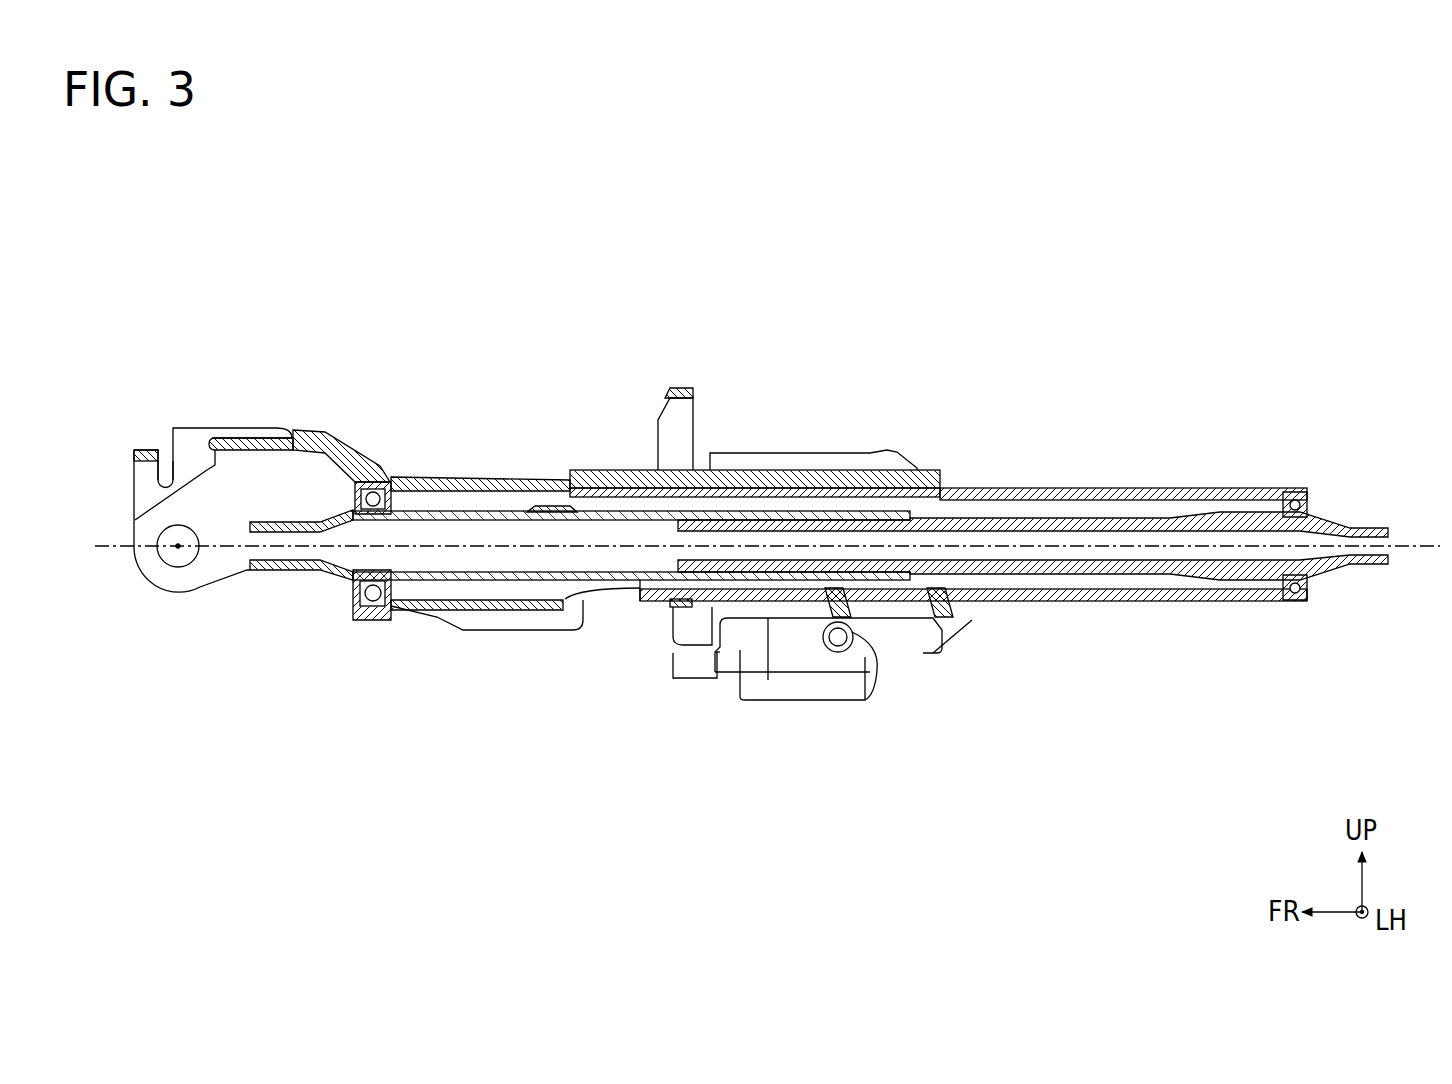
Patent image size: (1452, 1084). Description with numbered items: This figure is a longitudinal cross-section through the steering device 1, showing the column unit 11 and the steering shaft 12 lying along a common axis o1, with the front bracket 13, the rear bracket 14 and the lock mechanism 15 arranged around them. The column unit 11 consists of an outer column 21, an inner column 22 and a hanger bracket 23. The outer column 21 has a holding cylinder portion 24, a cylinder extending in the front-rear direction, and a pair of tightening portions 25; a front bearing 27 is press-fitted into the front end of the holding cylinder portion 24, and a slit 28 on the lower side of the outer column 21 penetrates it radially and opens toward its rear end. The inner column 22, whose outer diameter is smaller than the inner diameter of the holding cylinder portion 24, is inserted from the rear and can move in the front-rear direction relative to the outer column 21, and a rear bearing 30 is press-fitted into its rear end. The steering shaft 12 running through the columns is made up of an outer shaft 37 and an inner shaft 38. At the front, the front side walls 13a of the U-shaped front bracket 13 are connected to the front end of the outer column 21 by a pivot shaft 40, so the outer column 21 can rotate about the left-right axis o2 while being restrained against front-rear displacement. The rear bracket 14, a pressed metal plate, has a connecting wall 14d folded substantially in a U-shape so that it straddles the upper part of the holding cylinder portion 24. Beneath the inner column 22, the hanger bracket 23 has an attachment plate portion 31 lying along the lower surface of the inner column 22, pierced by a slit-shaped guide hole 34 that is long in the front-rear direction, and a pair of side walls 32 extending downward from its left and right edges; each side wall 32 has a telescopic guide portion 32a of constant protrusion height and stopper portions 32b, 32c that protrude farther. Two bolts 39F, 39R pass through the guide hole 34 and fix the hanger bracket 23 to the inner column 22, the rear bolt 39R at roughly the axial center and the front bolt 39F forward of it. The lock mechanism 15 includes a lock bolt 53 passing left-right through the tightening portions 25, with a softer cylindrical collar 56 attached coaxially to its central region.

The steering device 1 is at (1190, 398).
The column unit 11 is at (1062, 338).
The steering shaft 12 is at (842, 338).
The front bracket 13 is at (213, 424).
The front side walls 13a is at (183, 453).
The rear bracket 14 is at (690, 384).
The connecting wall 14d is at (670, 390).
The lock mechanism 15 is at (770, 622).
The outer column 21 is at (938, 467).
The inner column 22 is at (995, 484).
The hanger bracket 23 is at (960, 650).
The holding cylinder portion 24 is at (870, 468).
The tightening portions 25 is at (760, 626).
The front bearing 27 is at (380, 496).
The slit 28 is at (578, 632).
The rear bearing 30 is at (1290, 603).
The attachment plate portion 31 is at (717, 636).
The side walls 32 is at (782, 879).
The telescopic guide portion 32a is at (743, 652).
The stopper portion 32b is at (683, 610).
The stopper portion 32c is at (940, 655).
The guide hole 34 is at (722, 626).
The outer shaft 37 is at (704, 512).
The inner shaft 38 is at (760, 528).
The bolt 39F is at (858, 618).
The bolt 39R is at (953, 633).
The pivot shaft 40 is at (192, 566).
The lock bolt 53 is at (823, 648).
The collar 56 is at (841, 652).
The axis o1 is at (1405, 545).
The axis o2 is at (178, 548).